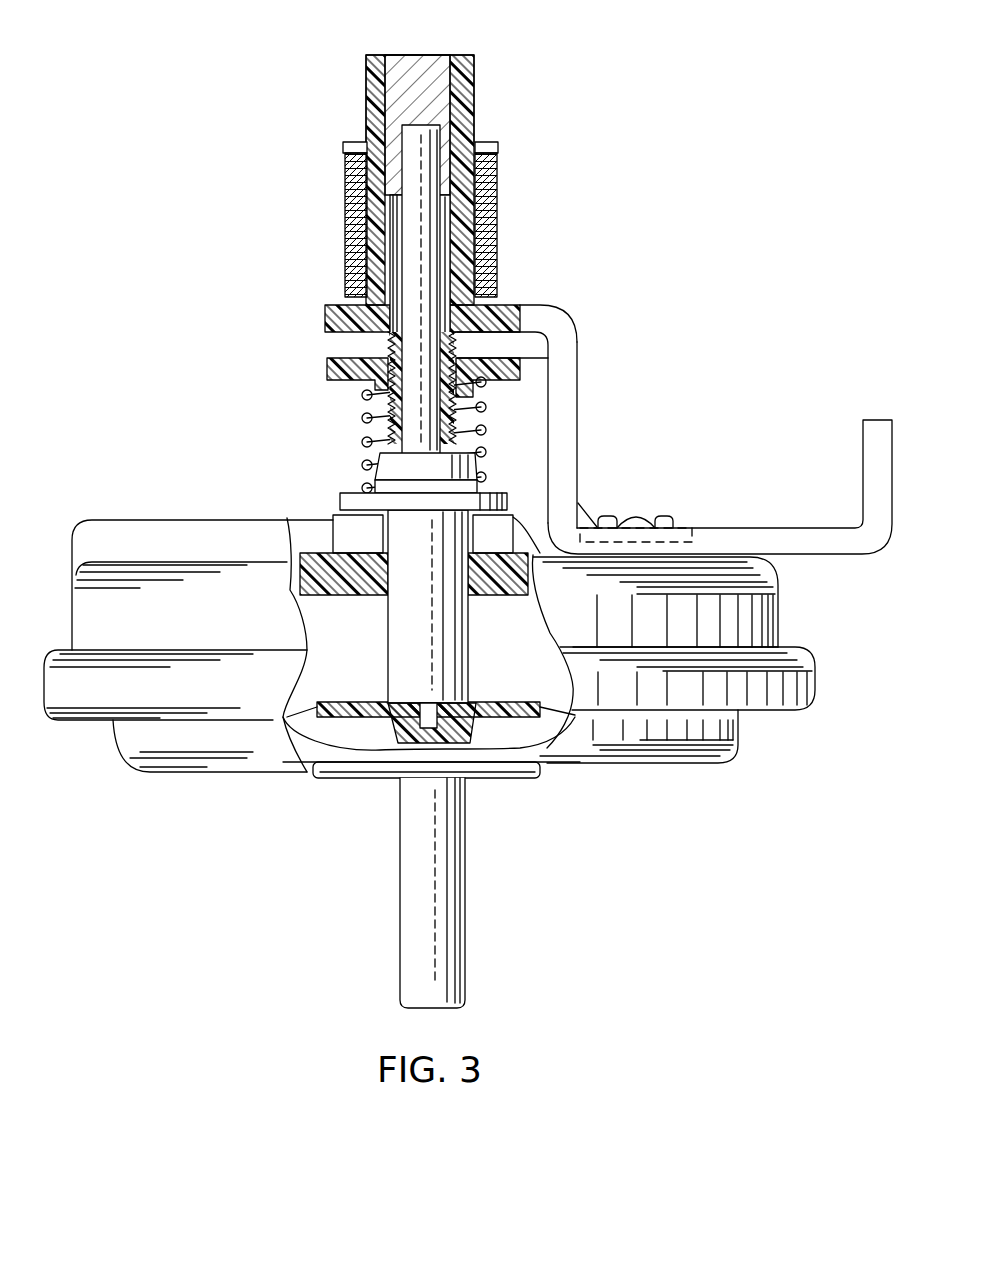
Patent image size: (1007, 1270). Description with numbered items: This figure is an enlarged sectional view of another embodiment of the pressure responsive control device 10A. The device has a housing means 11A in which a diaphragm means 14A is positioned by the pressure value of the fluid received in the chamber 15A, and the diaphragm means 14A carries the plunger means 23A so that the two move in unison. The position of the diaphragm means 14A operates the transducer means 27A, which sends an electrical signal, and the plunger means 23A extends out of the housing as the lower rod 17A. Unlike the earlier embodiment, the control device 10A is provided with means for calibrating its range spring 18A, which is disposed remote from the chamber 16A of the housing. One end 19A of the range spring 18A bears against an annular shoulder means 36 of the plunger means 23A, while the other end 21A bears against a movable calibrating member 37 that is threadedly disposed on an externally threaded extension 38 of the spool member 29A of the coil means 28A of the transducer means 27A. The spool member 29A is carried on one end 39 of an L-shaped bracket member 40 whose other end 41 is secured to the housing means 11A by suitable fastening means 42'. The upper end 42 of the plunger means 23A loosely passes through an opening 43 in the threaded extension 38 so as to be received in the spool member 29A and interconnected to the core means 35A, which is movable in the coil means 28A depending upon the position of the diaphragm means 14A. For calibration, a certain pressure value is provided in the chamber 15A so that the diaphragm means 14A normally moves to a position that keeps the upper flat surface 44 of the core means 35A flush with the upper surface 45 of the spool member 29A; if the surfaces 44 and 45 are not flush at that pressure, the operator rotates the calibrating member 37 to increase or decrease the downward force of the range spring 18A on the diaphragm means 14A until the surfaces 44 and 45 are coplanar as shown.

The pressure responsive control device 10A is at (692, 277).
The housing means 11A is at (107, 600).
The diaphragm means 14A is at (512, 718).
The chamber 15A is at (342, 735).
The chamber 16A is at (313, 620).
The actuating rod 17A is at (463, 940).
The range spring 18A is at (362, 420).
The one end of range spring 19A is at (362, 488).
The other end of range spring 21A is at (486, 390).
The plunger means 23A is at (400, 655).
The transducer means 27A is at (528, 182).
The coil means 28A is at (335, 198).
The spool member 29A is at (343, 302).
The core means 35A is at (435, 83).
The annular shoulder means 36 is at (485, 468).
The calibrating member 37 is at (340, 385).
The externally threaded extension 38 is at (388, 345).
The one end of bracket member 39 is at (515, 304).
The L-shaped bracket member 40 is at (578, 424).
The other end of bracket member 41 is at (742, 537).
The upper end of plunger means 42 is at (472, 265).
The fastening means 42' is at (648, 505).
The opening 43 is at (455, 298).
The upper flat surface of core means 44 is at (408, 55).
The upper surface of spool 45 is at (462, 55).